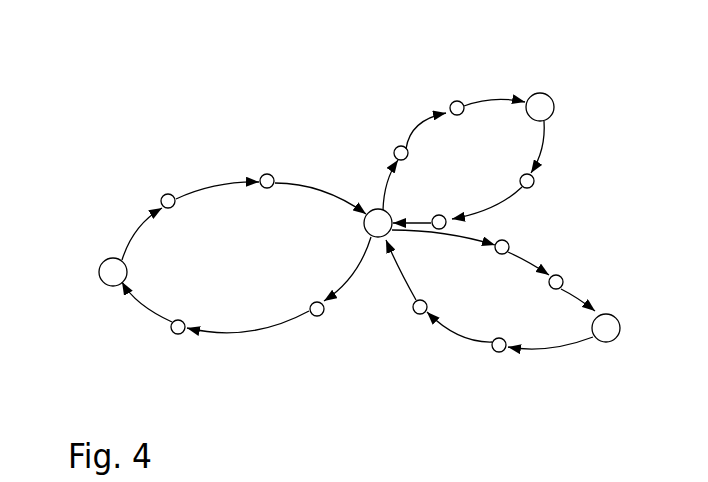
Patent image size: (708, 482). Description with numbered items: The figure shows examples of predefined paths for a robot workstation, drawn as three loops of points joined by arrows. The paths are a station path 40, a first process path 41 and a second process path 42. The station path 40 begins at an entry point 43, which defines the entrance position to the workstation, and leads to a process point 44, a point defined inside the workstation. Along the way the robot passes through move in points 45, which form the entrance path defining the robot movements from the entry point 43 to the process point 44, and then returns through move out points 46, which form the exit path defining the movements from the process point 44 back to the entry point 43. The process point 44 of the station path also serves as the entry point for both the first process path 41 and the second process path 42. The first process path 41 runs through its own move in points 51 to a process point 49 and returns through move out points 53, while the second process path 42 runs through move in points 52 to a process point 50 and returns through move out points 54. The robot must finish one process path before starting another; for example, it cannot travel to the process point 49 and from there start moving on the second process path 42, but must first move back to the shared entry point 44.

The station path 40 is at (218, 159).
The first process path 41 is at (488, 90).
The second process path 42 is at (590, 270).
The entry point 43 is at (99, 272).
The process point 44 is at (380, 237).
The move in points 45 is at (260, 177).
The move out points 46 is at (312, 316).
The process point 49 is at (552, 95).
The process point 50 is at (618, 326).
The move in points 51 is at (452, 105).
The move in points 52 is at (508, 245).
The move out points 53 is at (446, 219).
The move out points 54 is at (422, 315).